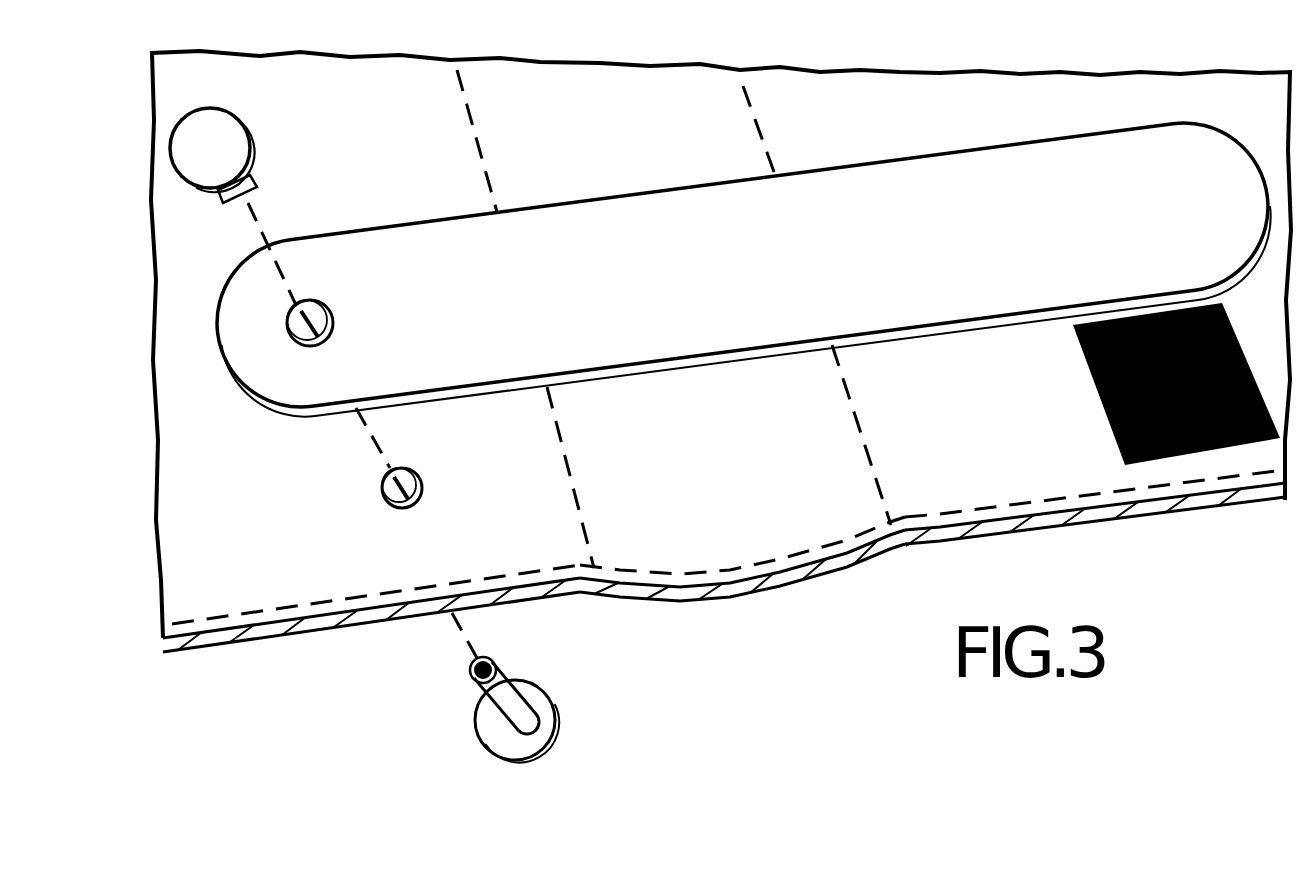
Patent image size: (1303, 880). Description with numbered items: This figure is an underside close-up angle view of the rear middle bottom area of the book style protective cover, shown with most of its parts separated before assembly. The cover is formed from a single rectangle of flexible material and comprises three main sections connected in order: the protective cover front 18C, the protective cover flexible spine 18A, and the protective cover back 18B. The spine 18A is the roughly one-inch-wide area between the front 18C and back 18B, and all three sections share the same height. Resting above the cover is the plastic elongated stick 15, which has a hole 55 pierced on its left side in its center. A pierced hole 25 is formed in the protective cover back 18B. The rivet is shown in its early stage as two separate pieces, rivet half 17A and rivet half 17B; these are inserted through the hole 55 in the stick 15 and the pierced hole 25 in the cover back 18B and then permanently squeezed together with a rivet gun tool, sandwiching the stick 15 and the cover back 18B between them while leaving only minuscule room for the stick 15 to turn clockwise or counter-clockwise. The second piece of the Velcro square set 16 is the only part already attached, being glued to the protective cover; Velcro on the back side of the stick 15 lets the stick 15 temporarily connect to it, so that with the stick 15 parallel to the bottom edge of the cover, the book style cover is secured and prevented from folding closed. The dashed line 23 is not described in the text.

The plastic elongated stick 15 is at (653, 224).
The second piece of the Velcro square set 16 is at (1100, 397).
The rivet half 17A is at (238, 118).
The rivet half 17B is at (476, 714).
The protective cover flexible spine 18A is at (712, 542).
The protective cover back 18B is at (333, 583).
The protective cover front 18C is at (997, 480).
The fold line 23 is at (550, 465).
The pierced hole 25 is at (404, 468).
The hole 55 is at (334, 322).